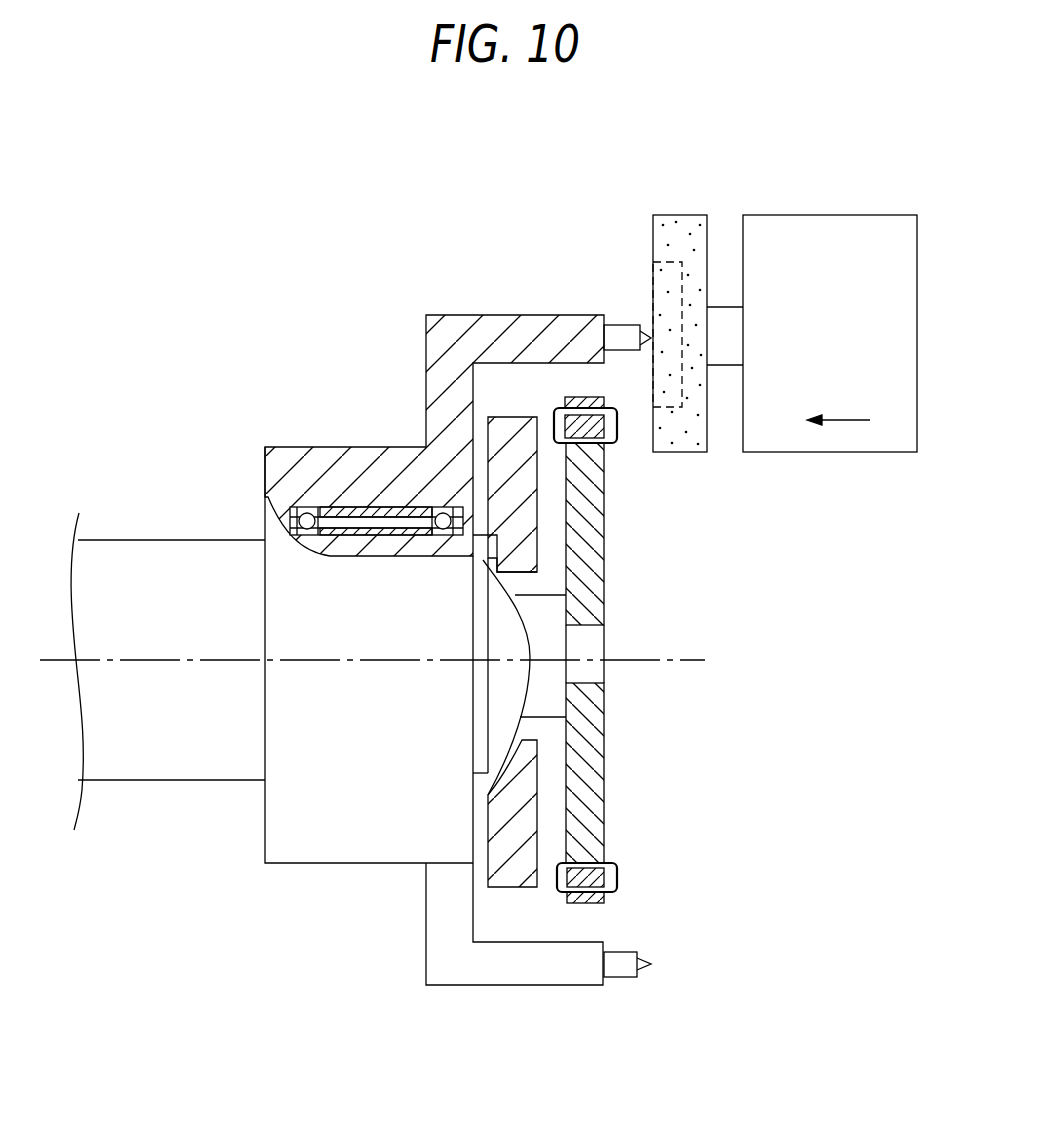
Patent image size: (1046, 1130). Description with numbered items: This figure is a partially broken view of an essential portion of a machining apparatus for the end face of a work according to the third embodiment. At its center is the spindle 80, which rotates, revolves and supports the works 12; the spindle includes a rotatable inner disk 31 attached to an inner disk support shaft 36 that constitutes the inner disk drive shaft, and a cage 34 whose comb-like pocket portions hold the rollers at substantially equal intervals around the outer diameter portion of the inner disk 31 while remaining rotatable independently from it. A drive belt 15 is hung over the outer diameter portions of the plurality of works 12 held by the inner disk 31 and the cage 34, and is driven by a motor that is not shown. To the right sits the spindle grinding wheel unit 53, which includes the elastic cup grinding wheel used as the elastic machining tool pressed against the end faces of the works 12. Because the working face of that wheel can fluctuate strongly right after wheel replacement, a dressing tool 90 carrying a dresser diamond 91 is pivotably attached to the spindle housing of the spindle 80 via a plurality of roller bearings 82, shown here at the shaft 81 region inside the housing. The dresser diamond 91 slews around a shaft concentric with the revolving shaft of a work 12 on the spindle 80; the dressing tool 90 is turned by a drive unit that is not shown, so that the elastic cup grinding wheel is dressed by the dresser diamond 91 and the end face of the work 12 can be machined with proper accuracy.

The work 12 is at (618, 428).
The drive belt 15 is at (604, 903).
The inner disk 31 is at (598, 562).
The cage 34 is at (490, 868).
The inner disk support shaft 36 is at (550, 642).
The spindle grinding wheel unit 53 is at (822, 213).
The spindle 80 is at (627, 757).
The shaft 81 is at (485, 555).
The roller bearing 82 is at (440, 510).
The dressing tool 90 is at (527, 975).
The dresser diamond 91 is at (633, 325).